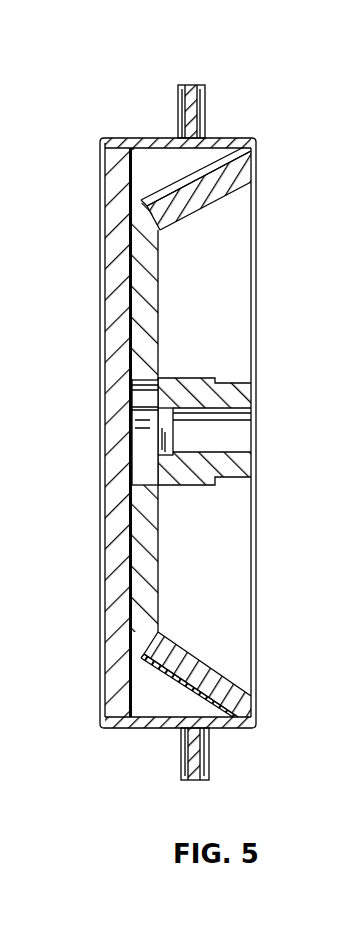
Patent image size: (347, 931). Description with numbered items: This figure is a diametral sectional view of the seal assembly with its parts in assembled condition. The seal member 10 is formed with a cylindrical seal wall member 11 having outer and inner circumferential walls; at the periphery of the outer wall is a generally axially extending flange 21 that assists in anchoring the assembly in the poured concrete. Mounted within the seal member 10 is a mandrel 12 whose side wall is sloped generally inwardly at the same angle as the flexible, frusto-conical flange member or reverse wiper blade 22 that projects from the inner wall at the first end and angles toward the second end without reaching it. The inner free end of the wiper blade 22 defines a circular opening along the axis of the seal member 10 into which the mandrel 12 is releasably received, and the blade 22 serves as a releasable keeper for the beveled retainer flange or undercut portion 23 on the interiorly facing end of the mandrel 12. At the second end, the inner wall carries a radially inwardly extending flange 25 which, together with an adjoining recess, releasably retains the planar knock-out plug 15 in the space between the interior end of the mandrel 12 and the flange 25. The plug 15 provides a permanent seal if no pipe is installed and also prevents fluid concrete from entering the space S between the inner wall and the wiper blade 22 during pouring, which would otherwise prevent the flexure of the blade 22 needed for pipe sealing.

The seal member 10 is at (180, 405).
The cylindrical seal wall member 11 is at (160, 136).
The mandrel 12 is at (138, 299).
The knock-out plug 15 is at (117, 252).
The axially extending flange 21 is at (207, 100).
The frusto-conical flange member (reverse wiper blade) 22 is at (176, 184).
The beveled retainer flange (undercut portion) 23 is at (134, 189).
The radially inwardly extending flange 25 is at (103, 150).
The space S is at (155, 698).